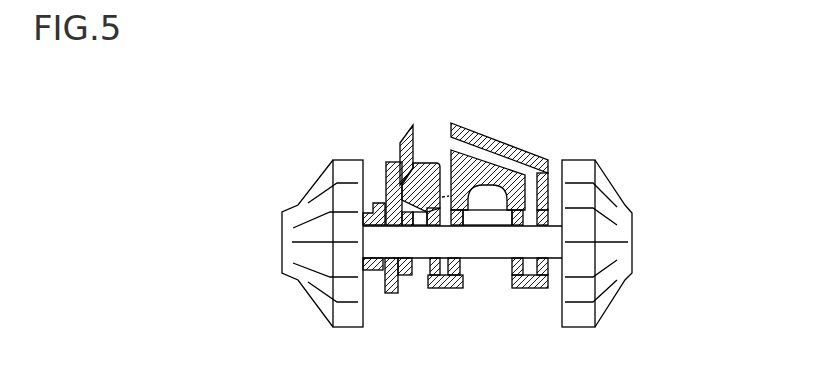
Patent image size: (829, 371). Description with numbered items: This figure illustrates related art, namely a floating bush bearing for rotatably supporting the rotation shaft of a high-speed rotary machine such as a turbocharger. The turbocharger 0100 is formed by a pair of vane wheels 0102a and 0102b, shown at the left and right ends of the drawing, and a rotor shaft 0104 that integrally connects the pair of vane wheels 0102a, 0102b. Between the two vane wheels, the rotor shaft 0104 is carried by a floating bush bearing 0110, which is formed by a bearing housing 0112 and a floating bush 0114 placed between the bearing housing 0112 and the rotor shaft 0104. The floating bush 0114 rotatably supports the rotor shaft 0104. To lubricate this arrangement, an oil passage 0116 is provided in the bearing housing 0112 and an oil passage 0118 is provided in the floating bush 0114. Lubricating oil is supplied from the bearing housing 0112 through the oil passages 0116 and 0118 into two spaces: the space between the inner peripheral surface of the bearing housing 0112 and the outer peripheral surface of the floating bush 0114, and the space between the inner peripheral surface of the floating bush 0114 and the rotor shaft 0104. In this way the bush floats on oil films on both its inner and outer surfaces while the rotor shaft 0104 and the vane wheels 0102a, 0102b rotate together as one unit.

The turbocharger 0100 is at (625, 118).
The vane wheel 0102a is at (630, 175).
The vane wheel 0102b is at (329, 162).
The rotor shaft 0104 is at (421, 259).
The floating bush bearing 0110 is at (505, 80).
The bearing housing 0112 is at (508, 152).
The floating bush 0114 is at (512, 276).
The oil passage 0116 is at (417, 146).
The oil passage 0118 is at (440, 196).